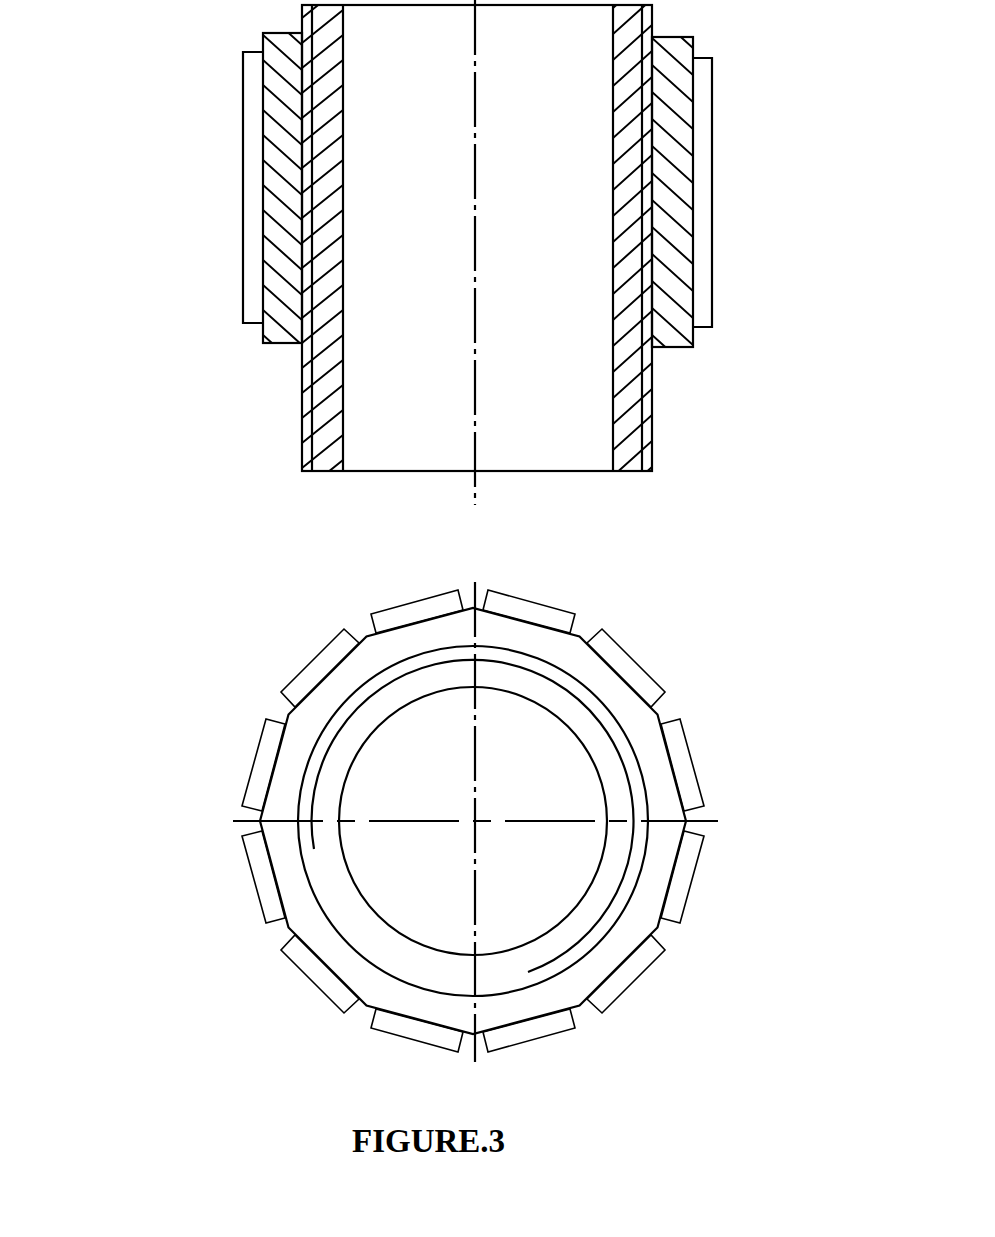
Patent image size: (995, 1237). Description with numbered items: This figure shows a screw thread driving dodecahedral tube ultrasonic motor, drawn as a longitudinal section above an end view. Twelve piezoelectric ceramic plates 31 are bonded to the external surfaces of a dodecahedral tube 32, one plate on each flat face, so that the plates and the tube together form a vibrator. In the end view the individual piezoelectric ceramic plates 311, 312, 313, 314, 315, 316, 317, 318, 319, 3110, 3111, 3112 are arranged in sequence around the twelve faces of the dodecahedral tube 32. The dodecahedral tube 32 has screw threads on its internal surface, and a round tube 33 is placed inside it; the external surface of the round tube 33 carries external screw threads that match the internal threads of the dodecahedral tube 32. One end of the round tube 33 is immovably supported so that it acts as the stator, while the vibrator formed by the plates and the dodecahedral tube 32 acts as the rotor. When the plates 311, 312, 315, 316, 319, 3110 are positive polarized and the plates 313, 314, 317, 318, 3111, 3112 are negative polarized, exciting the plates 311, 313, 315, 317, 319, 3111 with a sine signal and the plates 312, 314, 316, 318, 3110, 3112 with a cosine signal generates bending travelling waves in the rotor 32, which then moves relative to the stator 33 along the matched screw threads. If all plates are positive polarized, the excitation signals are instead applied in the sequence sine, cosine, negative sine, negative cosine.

The piezoelectric ceramic plates 31 is at (250, 140).
The dodecahedral tube 32 is at (273, 197).
The round tube 33 is at (325, 270).
The piezoelectric ceramic plate 311 is at (523, 617).
The piezoelectric ceramic plate 312 is at (622, 668).
The piezoelectric ceramic plate 313 is at (680, 757).
The piezoelectric ceramic plate 314 is at (688, 862).
The piezoelectric ceramic plate 315 is at (646, 953).
The piezoelectric ceramic plate 316 is at (535, 1030).
The piezoelectric ceramic plate 317 is at (432, 1037).
The piezoelectric ceramic plate 318 is at (331, 987).
The piezoelectric ceramic plate 319 is at (263, 874).
The piezoelectric ceramic plate 3110 is at (258, 762).
The piezoelectric ceramic plate 3111 is at (300, 683).
The piezoelectric ceramic plate 3112 is at (407, 622).